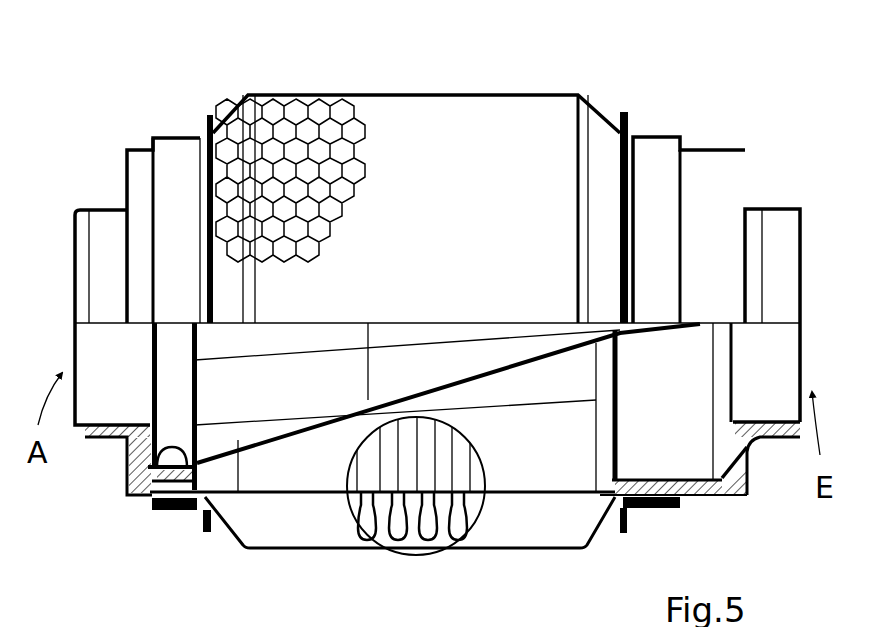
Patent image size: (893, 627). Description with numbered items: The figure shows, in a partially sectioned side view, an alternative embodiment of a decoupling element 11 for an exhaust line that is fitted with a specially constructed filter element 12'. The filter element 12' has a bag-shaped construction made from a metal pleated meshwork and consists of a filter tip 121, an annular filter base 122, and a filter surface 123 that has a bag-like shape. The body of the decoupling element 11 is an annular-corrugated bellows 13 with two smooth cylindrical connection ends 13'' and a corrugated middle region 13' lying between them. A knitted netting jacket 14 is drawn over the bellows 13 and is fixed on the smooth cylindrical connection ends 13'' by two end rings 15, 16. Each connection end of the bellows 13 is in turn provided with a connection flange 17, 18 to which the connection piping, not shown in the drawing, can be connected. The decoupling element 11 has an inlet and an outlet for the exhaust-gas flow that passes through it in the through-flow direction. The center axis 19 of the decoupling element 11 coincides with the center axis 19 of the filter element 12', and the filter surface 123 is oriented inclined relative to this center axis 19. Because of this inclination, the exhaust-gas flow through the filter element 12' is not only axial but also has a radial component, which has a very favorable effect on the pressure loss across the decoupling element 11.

The decoupling element 11 is at (725, 118).
The filter element 12' is at (447, 469).
The annular-corrugated bellows 13 is at (416, 516).
The corrugated middle region 13' is at (382, 556).
The smooth cylindrical connection ends 13'' is at (165, 557).
The knitted netting jacket 14 is at (320, 115).
The end ring 15 is at (170, 145).
The end ring 16 is at (630, 125).
The connection flange 17 is at (97, 213).
The connection flange 18 is at (783, 228).
The center axis 19 is at (452, 320).
The filter tip 121 is at (665, 325).
The annular filter base 122 is at (145, 452).
The filter surface 123 is at (300, 433).